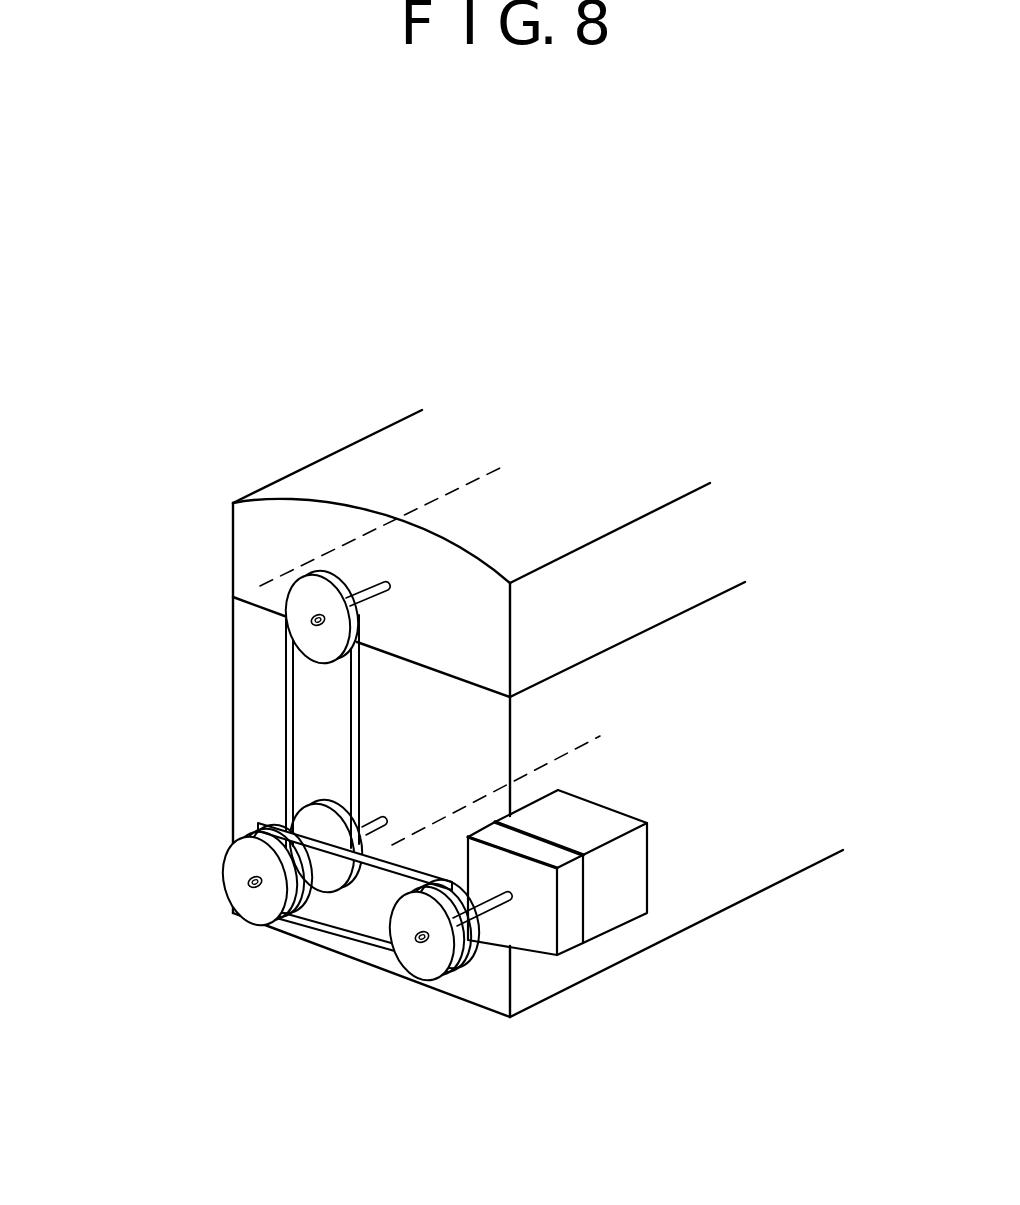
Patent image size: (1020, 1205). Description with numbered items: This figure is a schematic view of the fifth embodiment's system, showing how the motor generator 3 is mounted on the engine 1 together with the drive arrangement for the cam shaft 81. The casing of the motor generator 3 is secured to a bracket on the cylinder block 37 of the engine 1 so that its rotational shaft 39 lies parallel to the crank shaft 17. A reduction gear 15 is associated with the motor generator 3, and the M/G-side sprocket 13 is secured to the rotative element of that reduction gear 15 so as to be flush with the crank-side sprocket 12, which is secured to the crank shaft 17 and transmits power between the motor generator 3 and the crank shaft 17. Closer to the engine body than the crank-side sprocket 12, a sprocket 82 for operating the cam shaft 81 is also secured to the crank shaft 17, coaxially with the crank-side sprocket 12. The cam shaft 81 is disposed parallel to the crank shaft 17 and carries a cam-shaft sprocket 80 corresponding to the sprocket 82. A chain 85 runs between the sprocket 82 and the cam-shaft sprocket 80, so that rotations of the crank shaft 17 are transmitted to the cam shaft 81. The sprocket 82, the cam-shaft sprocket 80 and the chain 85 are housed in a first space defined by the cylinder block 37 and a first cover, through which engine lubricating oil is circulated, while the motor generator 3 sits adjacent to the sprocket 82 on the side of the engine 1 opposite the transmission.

The engine 1 is at (323, 451).
The motor generator 3 is at (617, 912).
The crank-side sprocket 12 is at (295, 920).
The M/G-side sprocket 13 is at (477, 963).
The reduction gear 15 is at (567, 938).
The crank shaft 17 is at (370, 818).
The cylinder block 37 is at (805, 869).
The rotational shaft 39 is at (500, 905).
The cam-shaft sprocket 80 is at (286, 612).
The cam shaft 81 is at (383, 598).
The sprocket for operating the cam shaft 82 is at (327, 900).
The chain 85 is at (291, 765).